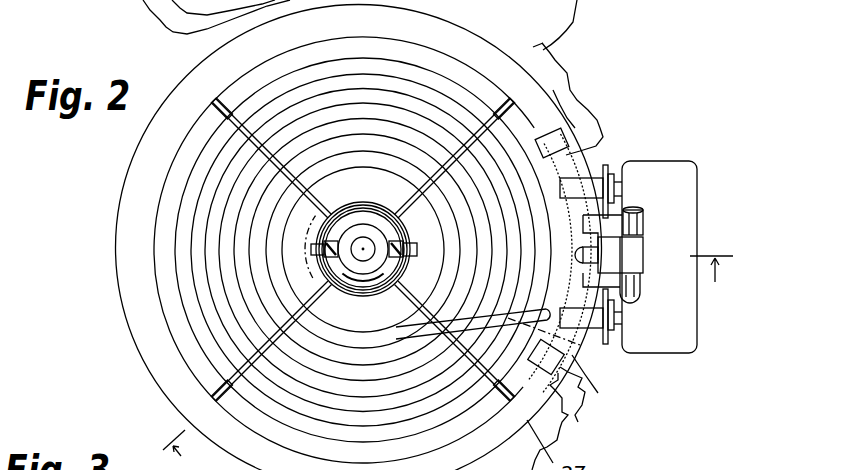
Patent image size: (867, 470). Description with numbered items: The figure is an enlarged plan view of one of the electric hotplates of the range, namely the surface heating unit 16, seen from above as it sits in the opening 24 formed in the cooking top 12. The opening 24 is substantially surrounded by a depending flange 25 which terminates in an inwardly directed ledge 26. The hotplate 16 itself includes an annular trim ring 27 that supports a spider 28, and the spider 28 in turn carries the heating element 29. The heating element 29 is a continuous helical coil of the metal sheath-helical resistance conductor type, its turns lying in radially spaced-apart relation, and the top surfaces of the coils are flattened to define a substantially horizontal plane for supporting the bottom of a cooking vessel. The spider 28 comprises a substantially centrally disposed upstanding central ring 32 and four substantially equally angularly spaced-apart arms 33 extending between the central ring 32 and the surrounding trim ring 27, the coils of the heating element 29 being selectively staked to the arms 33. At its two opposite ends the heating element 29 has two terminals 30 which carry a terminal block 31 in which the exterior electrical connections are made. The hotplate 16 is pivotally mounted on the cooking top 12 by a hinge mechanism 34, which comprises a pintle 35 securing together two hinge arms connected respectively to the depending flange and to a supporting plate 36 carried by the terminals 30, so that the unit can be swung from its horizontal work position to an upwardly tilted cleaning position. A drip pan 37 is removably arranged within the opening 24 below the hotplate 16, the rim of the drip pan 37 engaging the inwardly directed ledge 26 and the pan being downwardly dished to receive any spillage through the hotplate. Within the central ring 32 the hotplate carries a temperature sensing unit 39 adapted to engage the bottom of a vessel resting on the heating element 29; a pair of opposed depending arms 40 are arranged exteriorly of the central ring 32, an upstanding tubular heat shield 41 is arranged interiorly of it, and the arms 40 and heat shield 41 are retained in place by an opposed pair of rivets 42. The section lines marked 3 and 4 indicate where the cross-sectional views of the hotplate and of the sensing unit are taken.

The section line 3- 3 is at (448, 363).
The heating element coil / section line 4- 4 is at (449, 190).
The cooking top 12 is at (560, 43).
The surface heating unit 16 is at (102, 192).
The opening 24 is at (596, 116).
The depending flange 25 is at (591, 389).
The inwardly directed ledge 26 is at (587, 243).
The annular trim ring 27 is at (458, 33).
The spider 28 is at (323, 195).
The heating element 29 is at (188, 312).
The terminals 30 is at (590, 182).
The terminal block 31 is at (676, 163).
The central ring 32 is at (363, 203).
The arms 33 is at (228, 100).
The hinge mechanism 34 is at (652, 255).
The pintle 35 is at (630, 222).
The supporting plate 36 is at (598, 325).
The drip pan 37 is at (488, 341).
The temperature sensing unit 39 is at (386, 263).
The depending arms 40 is at (432, 246).
The tubular heat shield 41 is at (372, 292).
The rivets 42 is at (424, 246).